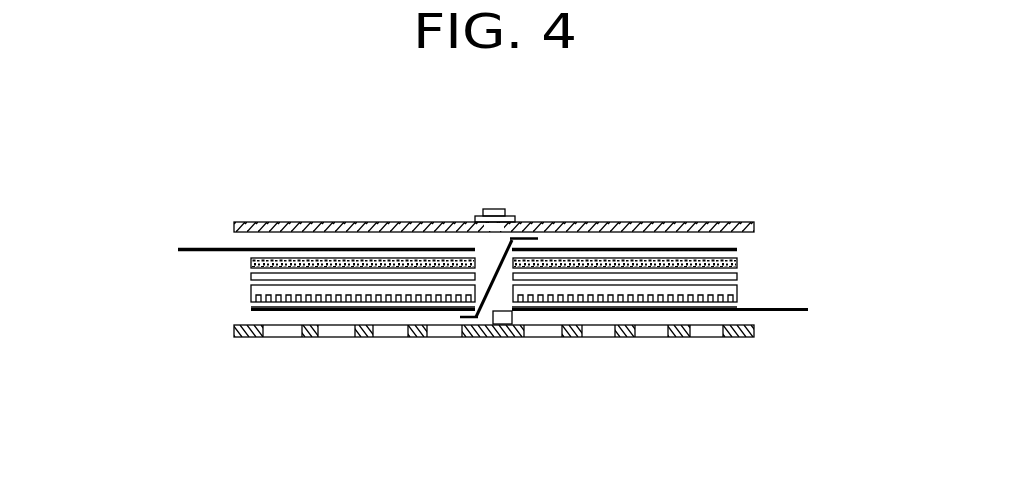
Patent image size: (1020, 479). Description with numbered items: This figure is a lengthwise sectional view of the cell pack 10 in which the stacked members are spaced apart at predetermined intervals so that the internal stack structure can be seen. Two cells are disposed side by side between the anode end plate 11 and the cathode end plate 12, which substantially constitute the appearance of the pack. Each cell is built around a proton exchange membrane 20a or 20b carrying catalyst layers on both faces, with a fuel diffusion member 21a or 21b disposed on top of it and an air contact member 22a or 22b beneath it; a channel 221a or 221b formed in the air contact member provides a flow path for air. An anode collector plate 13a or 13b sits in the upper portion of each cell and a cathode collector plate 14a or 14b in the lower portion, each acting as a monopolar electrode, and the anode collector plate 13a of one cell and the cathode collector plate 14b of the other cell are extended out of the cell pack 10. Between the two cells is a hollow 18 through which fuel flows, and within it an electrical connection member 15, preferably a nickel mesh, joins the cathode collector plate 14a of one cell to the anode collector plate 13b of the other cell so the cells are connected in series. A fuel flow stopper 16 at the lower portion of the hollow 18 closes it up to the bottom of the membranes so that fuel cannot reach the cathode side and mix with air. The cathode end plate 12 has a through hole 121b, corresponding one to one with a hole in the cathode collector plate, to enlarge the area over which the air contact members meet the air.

The cell pack 10 is at (762, 186).
The anode end plate 11 is at (717, 222).
The cathode end plate 12 is at (547, 360).
The anode collector plate 13a is at (202, 247).
The anode collector plate 13b is at (737, 250).
The cathode collector plate 14a is at (253, 312).
The cathode collector plate 14b is at (808, 311).
The electrical connection member 15 is at (527, 238).
The fuel flow stopper 16 is at (497, 337).
The hollow 18 is at (499, 278).
The proton exchange membrane 20a is at (253, 277).
The proton exchange membrane 20b is at (737, 278).
The fuel diffusion member 21a is at (253, 262).
The fuel diffusion member 21b is at (737, 262).
The air contact member 22a is at (253, 291).
The air contact member 22b is at (737, 290).
The channel 221a is at (253, 306).
The channel 221b is at (740, 303).
The through hole 121b is at (648, 332).